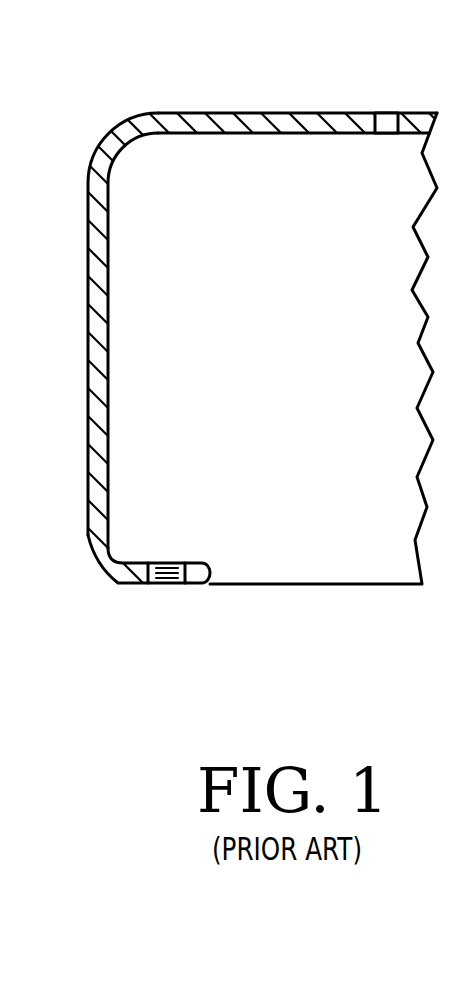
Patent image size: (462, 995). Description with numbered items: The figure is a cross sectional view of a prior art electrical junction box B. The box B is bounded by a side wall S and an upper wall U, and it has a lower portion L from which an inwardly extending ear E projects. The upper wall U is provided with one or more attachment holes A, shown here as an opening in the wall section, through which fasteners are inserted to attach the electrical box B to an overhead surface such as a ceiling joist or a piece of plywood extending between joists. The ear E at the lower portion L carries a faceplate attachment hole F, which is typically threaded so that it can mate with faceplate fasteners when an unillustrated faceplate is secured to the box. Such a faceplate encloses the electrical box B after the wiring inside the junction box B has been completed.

The attachment hole A is at (385, 122).
The upper wall U is at (282, 135).
The side wall S is at (88, 233).
The electrical box B is at (284, 347).
The ear E is at (198, 562).
The faceplate attachment hole F is at (170, 585).
The lower portion L is at (100, 570).